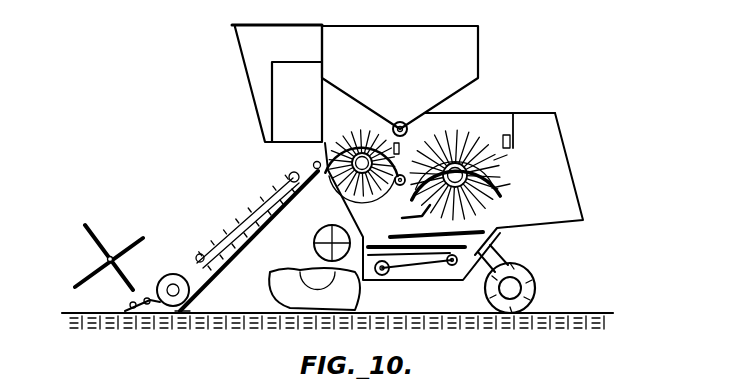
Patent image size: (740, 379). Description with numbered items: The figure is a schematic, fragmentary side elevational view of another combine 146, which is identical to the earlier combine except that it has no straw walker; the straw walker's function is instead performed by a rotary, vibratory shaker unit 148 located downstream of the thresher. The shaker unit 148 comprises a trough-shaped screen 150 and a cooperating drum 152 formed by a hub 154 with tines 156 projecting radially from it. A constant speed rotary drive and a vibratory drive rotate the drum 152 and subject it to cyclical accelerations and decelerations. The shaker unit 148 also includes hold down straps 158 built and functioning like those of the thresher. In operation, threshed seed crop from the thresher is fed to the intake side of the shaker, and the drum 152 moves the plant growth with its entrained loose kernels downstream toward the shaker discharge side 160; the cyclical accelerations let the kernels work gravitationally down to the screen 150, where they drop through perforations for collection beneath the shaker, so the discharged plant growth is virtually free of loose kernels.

The combine 146 is at (551, 96).
The shaker unit 148 is at (377, 181).
The trough-shaped screen 150 is at (498, 230).
The drum 152 is at (452, 120).
The hub 154 is at (468, 150).
The tines 156 is at (482, 172).
The hold down straps 158 is at (504, 183).
The shaker discharge side 160 is at (546, 176).